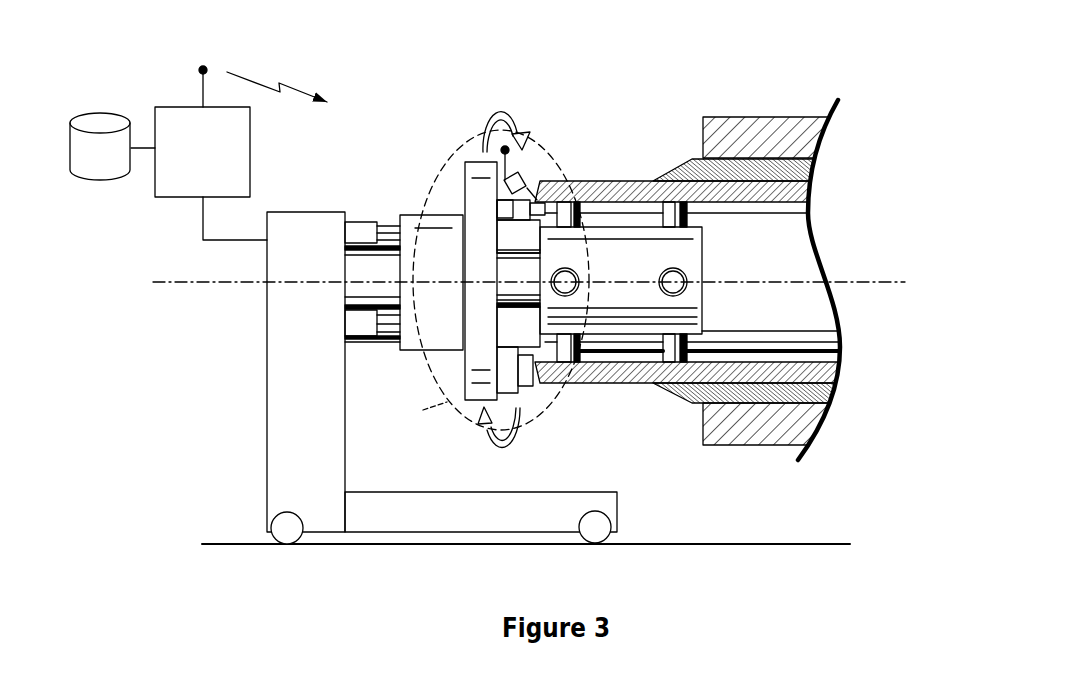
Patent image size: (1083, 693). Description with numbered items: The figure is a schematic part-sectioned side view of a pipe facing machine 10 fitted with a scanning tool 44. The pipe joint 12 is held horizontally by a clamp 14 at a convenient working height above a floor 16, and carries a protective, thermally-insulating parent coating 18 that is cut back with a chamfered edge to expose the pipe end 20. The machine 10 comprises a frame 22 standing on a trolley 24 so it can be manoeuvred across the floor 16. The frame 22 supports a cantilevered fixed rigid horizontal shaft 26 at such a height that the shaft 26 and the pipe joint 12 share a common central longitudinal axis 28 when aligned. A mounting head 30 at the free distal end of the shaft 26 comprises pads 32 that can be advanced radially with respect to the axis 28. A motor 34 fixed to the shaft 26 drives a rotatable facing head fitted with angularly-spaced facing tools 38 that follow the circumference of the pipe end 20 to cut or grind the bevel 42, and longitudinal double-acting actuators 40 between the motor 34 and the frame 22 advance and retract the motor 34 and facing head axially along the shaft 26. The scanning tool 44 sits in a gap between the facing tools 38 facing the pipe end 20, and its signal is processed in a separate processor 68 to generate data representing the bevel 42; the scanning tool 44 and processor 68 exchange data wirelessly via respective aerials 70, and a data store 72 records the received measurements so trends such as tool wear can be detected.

The pipe facing machine 10 is at (397, 125).
The pipe joint 12 is at (622, 118).
The clamp 14 is at (712, 423).
The floor 16 is at (233, 543).
The parent coating 18 is at (692, 160).
The pipe end 20 is at (592, 190).
The frame 22 is at (288, 367).
The trolley 24 is at (508, 512).
The shaft 26 is at (360, 288).
The central longitudinal axis 28 is at (168, 285).
The mounting head 30 is at (695, 302).
The pads 32 is at (676, 277).
The motor 34 is at (412, 222).
The facing tools 38 is at (527, 378).
The longitudinal double-acting actuators 40 is at (365, 228).
The bevel 42 is at (529, 198).
The scanning tool 44 is at (512, 210).
The processor 68 is at (185, 182).
The aerials 70 is at (200, 78).
The data store 72 is at (94, 163).